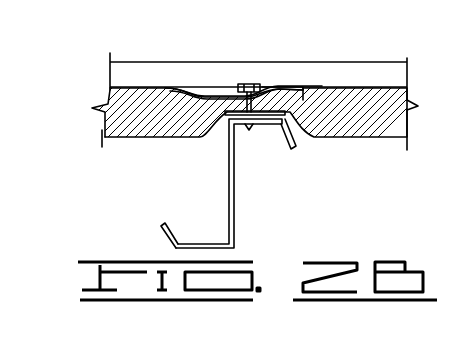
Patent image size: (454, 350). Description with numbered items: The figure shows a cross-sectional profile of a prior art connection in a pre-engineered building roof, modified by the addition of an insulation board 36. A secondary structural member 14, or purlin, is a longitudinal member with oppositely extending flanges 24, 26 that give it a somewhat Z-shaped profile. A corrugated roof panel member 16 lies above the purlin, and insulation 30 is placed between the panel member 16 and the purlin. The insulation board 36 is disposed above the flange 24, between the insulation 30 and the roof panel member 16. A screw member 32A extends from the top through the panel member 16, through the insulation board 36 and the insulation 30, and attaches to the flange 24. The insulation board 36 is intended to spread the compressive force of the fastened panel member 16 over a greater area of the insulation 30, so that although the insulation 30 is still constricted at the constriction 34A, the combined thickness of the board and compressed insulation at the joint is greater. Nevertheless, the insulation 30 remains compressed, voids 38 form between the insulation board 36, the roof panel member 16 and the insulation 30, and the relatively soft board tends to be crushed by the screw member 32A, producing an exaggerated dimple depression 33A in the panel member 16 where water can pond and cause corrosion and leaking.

The secondary structural member 14 is at (237, 207).
The corrugated roof panel member 16 is at (320, 62).
The flange 24 is at (253, 128).
The flange 26 is at (203, 245).
The insulation 30 is at (135, 138).
The screw member 32A is at (250, 84).
The dimple depression 33A is at (267, 87).
The constriction 34A is at (297, 146).
The insulation board 36 is at (207, 91).
The void 38 is at (183, 90).